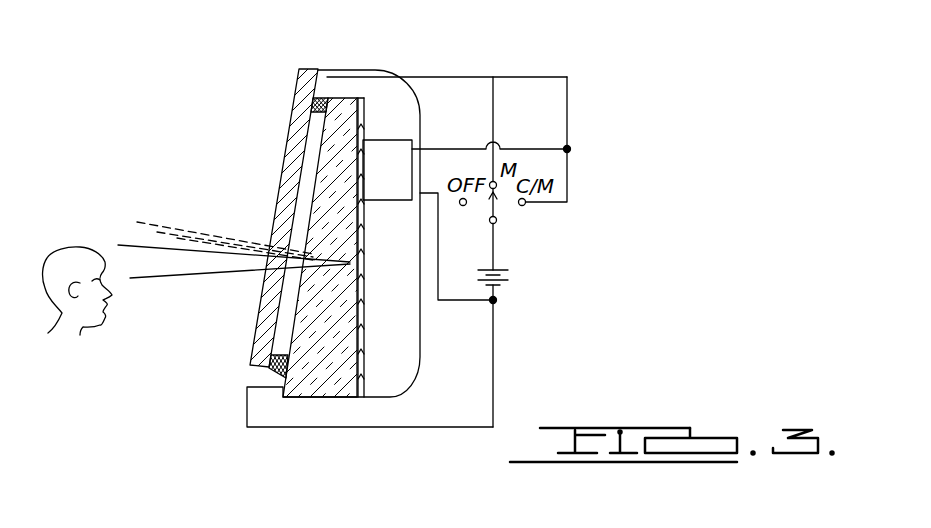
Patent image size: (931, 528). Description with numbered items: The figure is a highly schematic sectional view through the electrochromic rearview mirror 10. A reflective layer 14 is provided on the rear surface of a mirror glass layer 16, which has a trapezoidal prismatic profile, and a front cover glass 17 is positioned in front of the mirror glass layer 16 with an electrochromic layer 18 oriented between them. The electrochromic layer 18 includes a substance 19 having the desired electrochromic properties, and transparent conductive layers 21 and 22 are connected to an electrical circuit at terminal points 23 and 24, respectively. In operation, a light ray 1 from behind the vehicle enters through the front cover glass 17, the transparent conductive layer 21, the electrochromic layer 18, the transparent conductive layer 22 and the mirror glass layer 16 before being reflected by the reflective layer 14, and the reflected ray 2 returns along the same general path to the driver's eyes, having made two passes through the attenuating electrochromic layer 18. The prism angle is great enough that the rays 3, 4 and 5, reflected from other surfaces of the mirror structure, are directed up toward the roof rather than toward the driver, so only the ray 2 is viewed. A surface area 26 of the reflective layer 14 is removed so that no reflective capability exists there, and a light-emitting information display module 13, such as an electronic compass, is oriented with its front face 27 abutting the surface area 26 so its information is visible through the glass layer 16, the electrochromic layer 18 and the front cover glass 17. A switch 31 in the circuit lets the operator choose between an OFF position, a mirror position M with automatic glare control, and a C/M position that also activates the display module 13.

The light ray 1 is at (122, 242).
The reflected ray 2 is at (130, 288).
The ray 3 is at (137, 220).
The ray 4 is at (158, 231).
The ray 5 is at (178, 238).
The mirror 10 is at (279, 76).
The light-emitting information display module 13 is at (396, 152).
The reflective layer 14 is at (361, 328).
The mirror glass layer 16 is at (363, 357).
The front cover glass 17 is at (292, 117).
The electrochromic layer 18 is at (278, 338).
The substance 19 is at (282, 307).
The transparent conductive layer 21 is at (322, 88).
The transparent conductive layer 22 is at (282, 378).
The terminal point 23 is at (328, 81).
The terminal point 24 is at (281, 390).
The surface area 26 is at (368, 182).
The front face 27 is at (346, 148).
The switch 31 is at (495, 212).